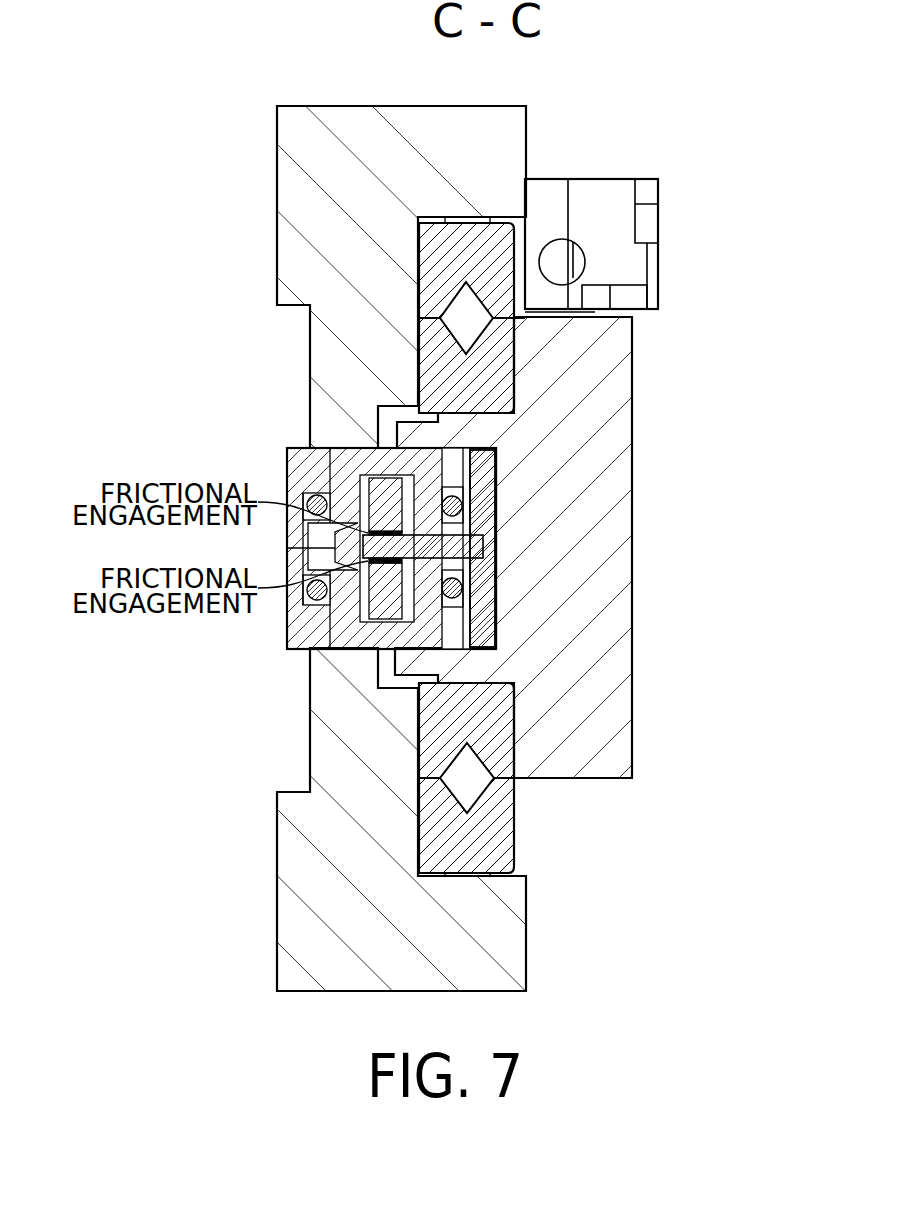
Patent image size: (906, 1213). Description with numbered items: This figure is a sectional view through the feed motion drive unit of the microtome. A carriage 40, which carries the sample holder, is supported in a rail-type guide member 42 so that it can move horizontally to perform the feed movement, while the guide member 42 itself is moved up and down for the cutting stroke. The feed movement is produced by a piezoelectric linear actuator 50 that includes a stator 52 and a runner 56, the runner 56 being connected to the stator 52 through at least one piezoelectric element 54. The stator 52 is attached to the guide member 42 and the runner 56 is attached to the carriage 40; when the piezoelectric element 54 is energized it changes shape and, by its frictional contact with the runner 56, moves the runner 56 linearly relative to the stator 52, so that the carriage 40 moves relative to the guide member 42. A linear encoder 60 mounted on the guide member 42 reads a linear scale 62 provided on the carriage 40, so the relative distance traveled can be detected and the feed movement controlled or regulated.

The carriage 40 is at (633, 462).
The rail-type guide member 42 is at (360, 106).
The piezoelectric linear actuator 50 is at (434, 549).
The stator 52 is at (348, 628).
The piezoelectric element 54 is at (387, 497).
The runner 56 is at (497, 607).
The linear encoder 60 is at (600, 179).
The linear scale 62 is at (595, 317).